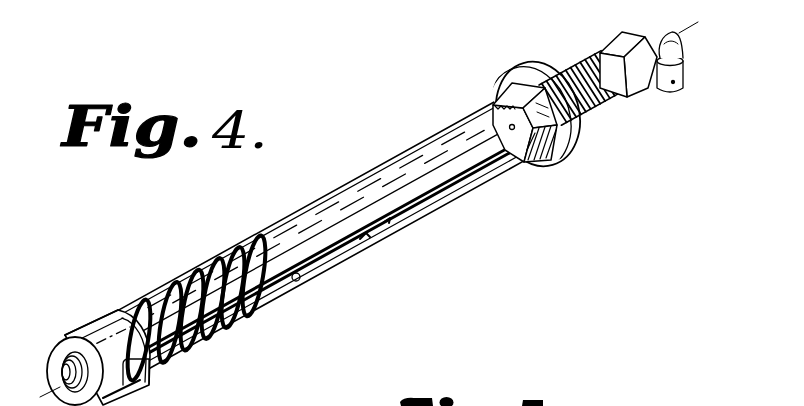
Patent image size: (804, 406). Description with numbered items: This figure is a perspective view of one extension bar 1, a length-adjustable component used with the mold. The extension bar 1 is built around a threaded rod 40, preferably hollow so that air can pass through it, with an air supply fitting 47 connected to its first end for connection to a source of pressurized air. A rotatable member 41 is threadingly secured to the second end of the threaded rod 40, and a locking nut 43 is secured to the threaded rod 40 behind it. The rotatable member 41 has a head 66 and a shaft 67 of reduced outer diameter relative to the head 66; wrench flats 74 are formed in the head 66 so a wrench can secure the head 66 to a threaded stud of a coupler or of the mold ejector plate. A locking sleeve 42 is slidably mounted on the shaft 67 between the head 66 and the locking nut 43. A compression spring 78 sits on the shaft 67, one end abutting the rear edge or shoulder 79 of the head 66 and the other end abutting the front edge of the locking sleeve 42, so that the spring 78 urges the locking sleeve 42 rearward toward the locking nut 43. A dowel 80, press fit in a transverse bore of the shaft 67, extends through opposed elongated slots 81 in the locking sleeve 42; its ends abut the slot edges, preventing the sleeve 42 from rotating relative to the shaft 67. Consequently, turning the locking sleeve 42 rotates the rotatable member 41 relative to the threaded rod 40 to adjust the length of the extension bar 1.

The extension bar 1 is at (385, 213).
The threaded rod 40 is at (602, 94).
The rotatable member 41 is at (118, 326).
The locking sleeve 42 is at (446, 200).
The locking nut 43 is at (527, 147).
The air supply fitting 47 is at (688, 80).
The head 66 is at (66, 330).
The shaft 67 is at (206, 308).
The wrench flats 74 is at (141, 371).
The compression spring 78 is at (240, 322).
The shoulder 79 is at (116, 306).
The dowel 80 is at (298, 281).
The elongated slots 81 is at (364, 238).